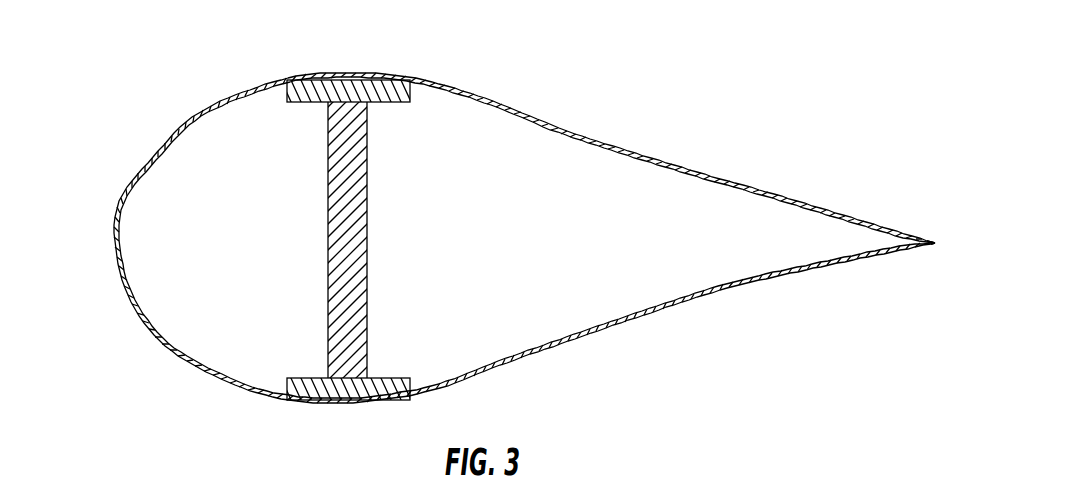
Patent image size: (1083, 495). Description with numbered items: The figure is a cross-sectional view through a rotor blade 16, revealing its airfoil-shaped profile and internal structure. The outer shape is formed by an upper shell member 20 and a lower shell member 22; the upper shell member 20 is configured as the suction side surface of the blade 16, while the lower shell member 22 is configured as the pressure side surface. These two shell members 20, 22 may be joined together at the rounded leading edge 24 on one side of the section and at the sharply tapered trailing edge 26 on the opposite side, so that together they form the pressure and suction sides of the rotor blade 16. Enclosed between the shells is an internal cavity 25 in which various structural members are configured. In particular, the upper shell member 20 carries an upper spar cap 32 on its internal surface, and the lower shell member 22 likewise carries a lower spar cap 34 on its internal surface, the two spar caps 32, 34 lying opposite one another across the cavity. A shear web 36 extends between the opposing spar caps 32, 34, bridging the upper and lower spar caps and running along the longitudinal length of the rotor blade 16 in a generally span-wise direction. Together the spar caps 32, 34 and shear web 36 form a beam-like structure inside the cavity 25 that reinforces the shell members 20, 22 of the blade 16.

The rotor blade 16 is at (784, 121).
The upper shell member 20 is at (497, 101).
The lower shell member 22 is at (518, 362).
The leading edge 24 is at (113, 236).
The internal cavity 25 is at (609, 284).
The trailing edge 26 is at (937, 243).
The upper spar cap 32 is at (396, 103).
The lower spar cap 34 is at (384, 378).
The shear web 36 is at (327, 176).